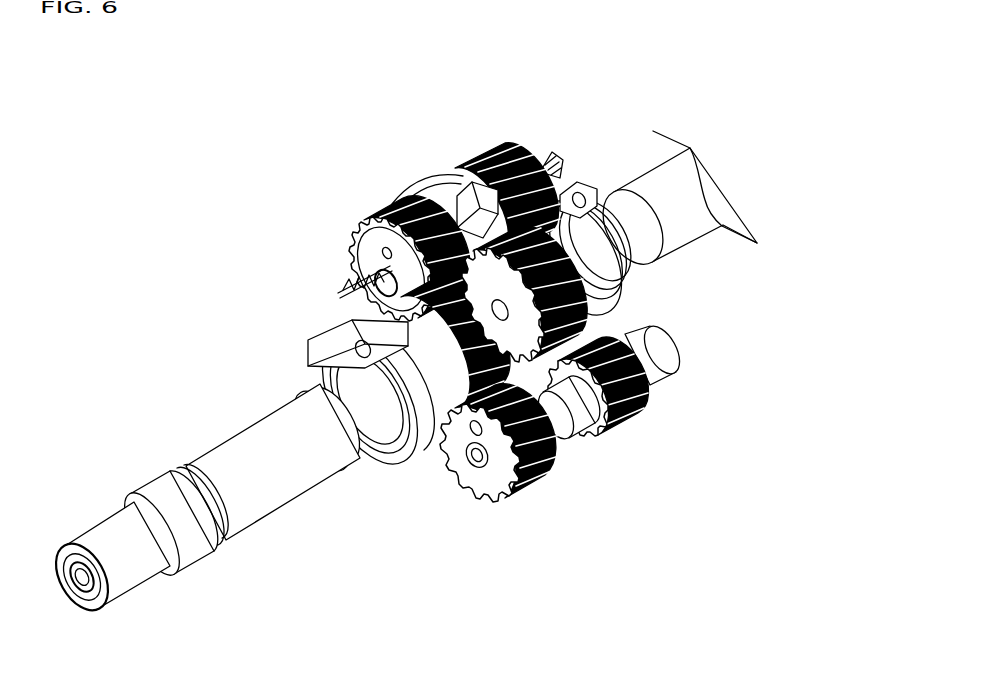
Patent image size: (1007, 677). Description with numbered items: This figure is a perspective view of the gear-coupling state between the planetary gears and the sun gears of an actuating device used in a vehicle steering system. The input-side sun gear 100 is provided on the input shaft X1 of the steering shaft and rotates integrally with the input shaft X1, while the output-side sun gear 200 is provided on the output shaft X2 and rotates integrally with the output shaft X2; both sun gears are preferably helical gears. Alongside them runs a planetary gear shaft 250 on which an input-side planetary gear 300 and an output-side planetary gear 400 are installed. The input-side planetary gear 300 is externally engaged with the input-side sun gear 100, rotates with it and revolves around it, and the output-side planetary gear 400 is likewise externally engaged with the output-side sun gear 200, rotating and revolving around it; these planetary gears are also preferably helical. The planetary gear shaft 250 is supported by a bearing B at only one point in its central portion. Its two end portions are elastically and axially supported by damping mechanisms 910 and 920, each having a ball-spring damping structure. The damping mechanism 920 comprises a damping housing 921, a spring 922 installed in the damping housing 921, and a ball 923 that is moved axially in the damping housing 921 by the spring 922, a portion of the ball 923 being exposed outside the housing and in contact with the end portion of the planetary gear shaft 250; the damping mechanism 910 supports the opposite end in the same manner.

The input-side sun gear 100 is at (622, 288).
The output-side sun gear 200 is at (433, 427).
The planetary gear shaft 250 is at (478, 232).
The input-side planetary gear 300 is at (598, 284).
The output-side planetary gear 400 is at (390, 205).
The damping mechanism 910 is at (663, 245).
The damping mechanism 920 is at (289, 266).
The damping housing 921 is at (350, 287).
The spring 922 is at (345, 318).
The ball 923 is at (355, 265).
The bearing B is at (463, 197).
The input shaft X1 is at (683, 227).
The output shaft X2 is at (303, 462).